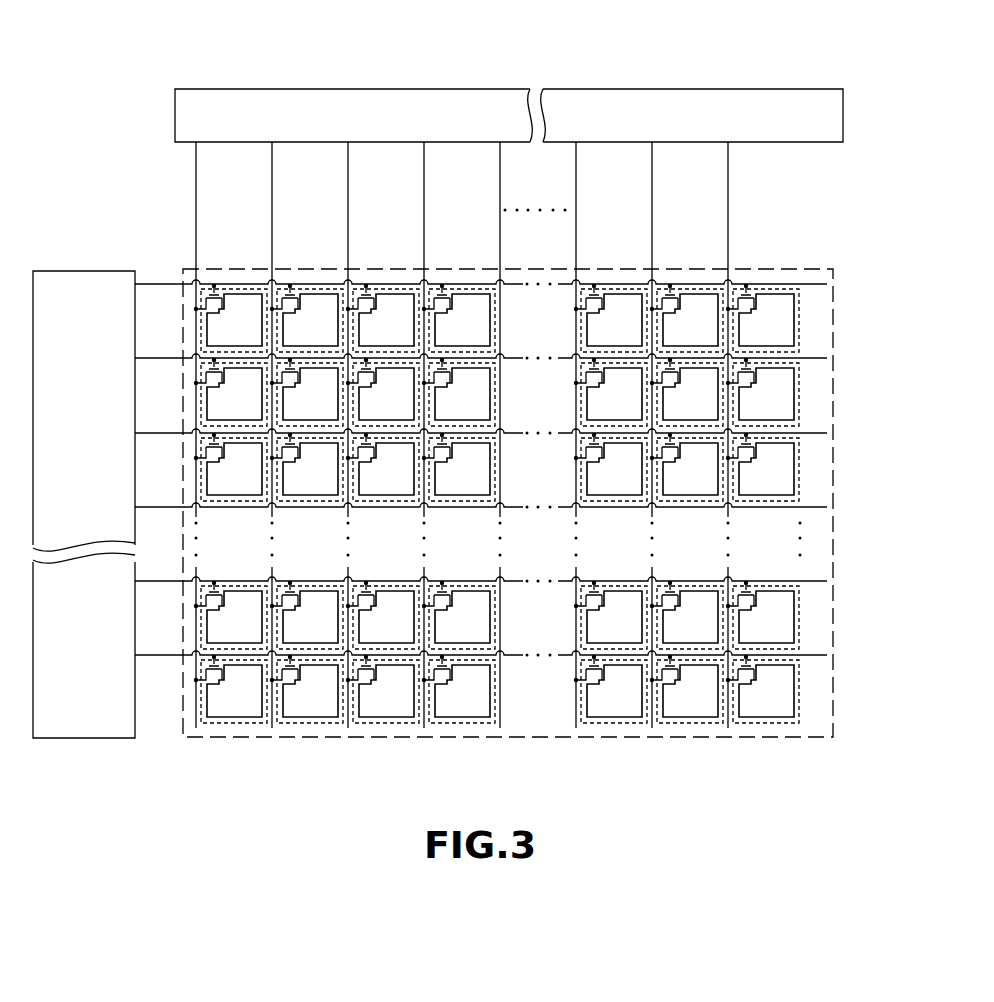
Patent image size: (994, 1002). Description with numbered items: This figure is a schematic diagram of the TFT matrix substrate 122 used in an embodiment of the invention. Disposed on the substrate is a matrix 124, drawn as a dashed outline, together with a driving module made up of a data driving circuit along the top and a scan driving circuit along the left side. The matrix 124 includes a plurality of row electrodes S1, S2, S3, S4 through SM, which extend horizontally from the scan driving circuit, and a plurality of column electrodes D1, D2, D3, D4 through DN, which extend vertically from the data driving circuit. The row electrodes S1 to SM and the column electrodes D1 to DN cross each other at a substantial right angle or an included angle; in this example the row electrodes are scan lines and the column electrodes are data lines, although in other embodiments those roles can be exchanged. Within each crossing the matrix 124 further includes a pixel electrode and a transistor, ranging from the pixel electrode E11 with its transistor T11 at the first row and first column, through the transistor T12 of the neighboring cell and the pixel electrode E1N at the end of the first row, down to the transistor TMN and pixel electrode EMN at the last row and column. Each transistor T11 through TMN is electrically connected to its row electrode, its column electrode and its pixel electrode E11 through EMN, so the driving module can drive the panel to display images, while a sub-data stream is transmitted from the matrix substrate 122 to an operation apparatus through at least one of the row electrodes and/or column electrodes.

The matrix substrate 122 is at (204, 50).
The matrix 124 is at (698, 268).
The column electrode D1 is at (212, 435).
The column electrode D2 is at (288, 435).
The column electrode D3 is at (364, 435).
The column electrode D4 is at (440, 435).
The column electrode DN is at (744, 435).
The row electrode S1 is at (481, 272).
The row electrode S2 is at (481, 346).
The row electrode S3 is at (481, 421).
The row electrode S4 is at (481, 495).
The row electrode SM is at (481, 644).
The pixel electrode E11 is at (247, 301).
The transistor T11 is at (207, 289).
The transistor T12 is at (292, 278).
The pixel electrode E1N is at (783, 300).
The transistor TMN is at (750, 683).
The pixel electrode EMN is at (786, 701).